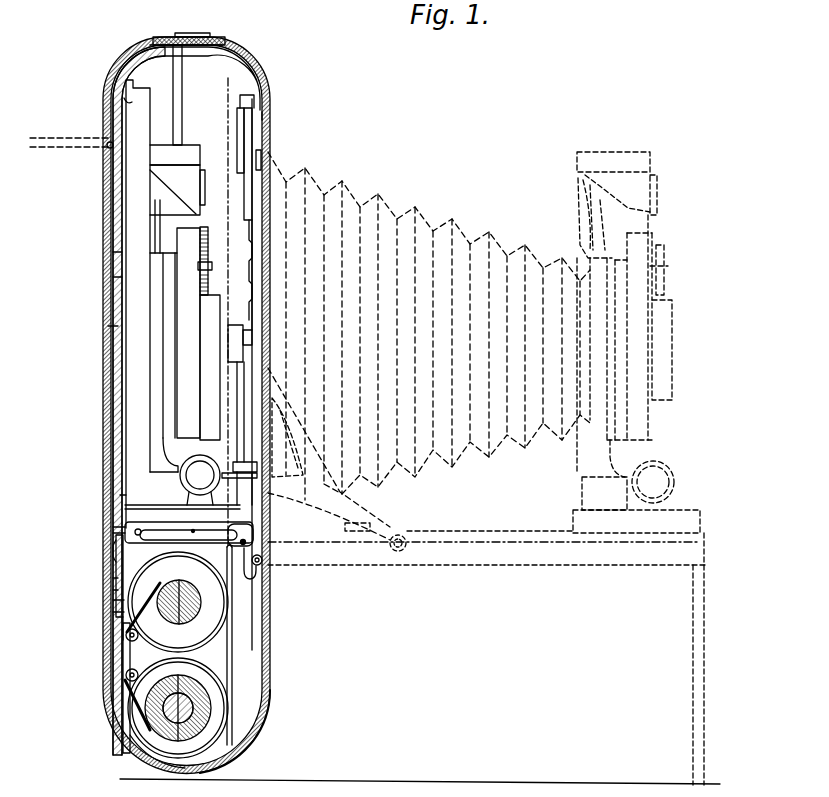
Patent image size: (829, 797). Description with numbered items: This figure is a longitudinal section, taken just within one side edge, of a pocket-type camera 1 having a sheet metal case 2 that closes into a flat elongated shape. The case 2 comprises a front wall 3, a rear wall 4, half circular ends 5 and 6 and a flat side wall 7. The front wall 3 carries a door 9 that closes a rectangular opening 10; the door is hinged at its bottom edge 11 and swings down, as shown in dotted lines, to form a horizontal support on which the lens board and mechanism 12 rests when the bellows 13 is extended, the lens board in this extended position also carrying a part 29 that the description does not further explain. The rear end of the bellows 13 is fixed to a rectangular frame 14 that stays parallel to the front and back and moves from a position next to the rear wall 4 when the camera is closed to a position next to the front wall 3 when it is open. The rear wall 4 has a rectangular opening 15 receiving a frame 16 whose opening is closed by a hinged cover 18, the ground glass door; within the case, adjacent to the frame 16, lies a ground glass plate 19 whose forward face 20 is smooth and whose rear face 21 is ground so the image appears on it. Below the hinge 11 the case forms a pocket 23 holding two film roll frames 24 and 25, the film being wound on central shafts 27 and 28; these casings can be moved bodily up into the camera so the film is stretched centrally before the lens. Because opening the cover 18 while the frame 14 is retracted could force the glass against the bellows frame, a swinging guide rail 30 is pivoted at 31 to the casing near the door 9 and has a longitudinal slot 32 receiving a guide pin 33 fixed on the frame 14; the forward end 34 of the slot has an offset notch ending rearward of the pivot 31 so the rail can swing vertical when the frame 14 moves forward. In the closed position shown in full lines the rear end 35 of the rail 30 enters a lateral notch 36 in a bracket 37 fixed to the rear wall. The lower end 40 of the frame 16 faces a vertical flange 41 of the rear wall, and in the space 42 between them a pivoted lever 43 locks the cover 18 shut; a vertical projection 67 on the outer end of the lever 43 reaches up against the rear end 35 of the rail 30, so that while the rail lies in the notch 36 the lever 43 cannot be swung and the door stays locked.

The camera 1 is at (262, 90).
The sheet metal case 2 is at (250, 70).
The front wall 3 is at (262, 634).
The rear wall 4 is at (103, 650).
The half circular end 5 is at (228, 52).
The half circular end 6 is at (250, 740).
The flat side wall 7 is at (44, 572).
The door 9 is at (272, 142).
The rectangular opening 10 is at (262, 114).
The bottom edge hinge 11 is at (260, 567).
The lens board and mechanism 12 is at (153, 385).
The bellows 13 is at (425, 218).
The rectangular frame 14 is at (127, 98).
The rectangular opening 15 is at (120, 619).
The frame 16 is at (117, 556).
The hinged cover 18 is at (106, 174).
The ground glass plate 19 is at (113, 330).
The forward face 20 is at (113, 256).
The rear face 21 is at (113, 280).
The pocket 23 is at (218, 664).
The film roll frame 24 is at (126, 731).
The film roll frame 25 is at (135, 569).
The central shaft 27 is at (196, 577).
The central shaft 28 is at (148, 740).
The knob 29 is at (672, 358).
The swinging guide rail 30 is at (165, 531).
The pivot 31 is at (247, 541).
The longitudinal slot 32 is at (193, 527).
The guide pin 33 is at (138, 530).
The forward end of slot 34 is at (250, 531).
The rear end of guide rail 35 is at (115, 528).
The lateral notch 36 is at (120, 517).
The bracket 37 is at (122, 499).
The lower end of frame 40 is at (118, 601).
The vertical flange 41 is at (118, 613).
The space 42 is at (116, 579).
The pivoted lever 43 is at (118, 591).
The vertical projection 67 is at (115, 534).